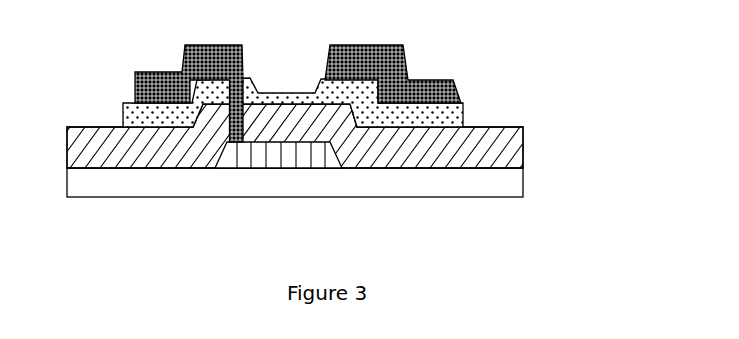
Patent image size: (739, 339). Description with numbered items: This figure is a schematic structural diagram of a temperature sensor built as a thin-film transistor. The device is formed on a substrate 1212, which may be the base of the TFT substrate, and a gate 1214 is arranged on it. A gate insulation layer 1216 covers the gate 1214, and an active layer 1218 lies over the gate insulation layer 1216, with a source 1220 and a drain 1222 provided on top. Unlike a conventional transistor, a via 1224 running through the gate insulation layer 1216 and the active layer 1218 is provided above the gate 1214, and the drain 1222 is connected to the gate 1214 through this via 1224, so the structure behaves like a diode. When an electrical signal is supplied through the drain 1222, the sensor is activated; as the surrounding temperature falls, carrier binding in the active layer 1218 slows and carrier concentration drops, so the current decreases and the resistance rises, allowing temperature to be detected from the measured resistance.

The substrate 1212 is at (523, 186).
The gate 1214 is at (243, 164).
The gate insulation layer 1216 is at (523, 155).
The active layer 1218 is at (464, 112).
The source 1220 is at (405, 46).
The drain 1222 is at (135, 88).
The via 1224 is at (248, 77).